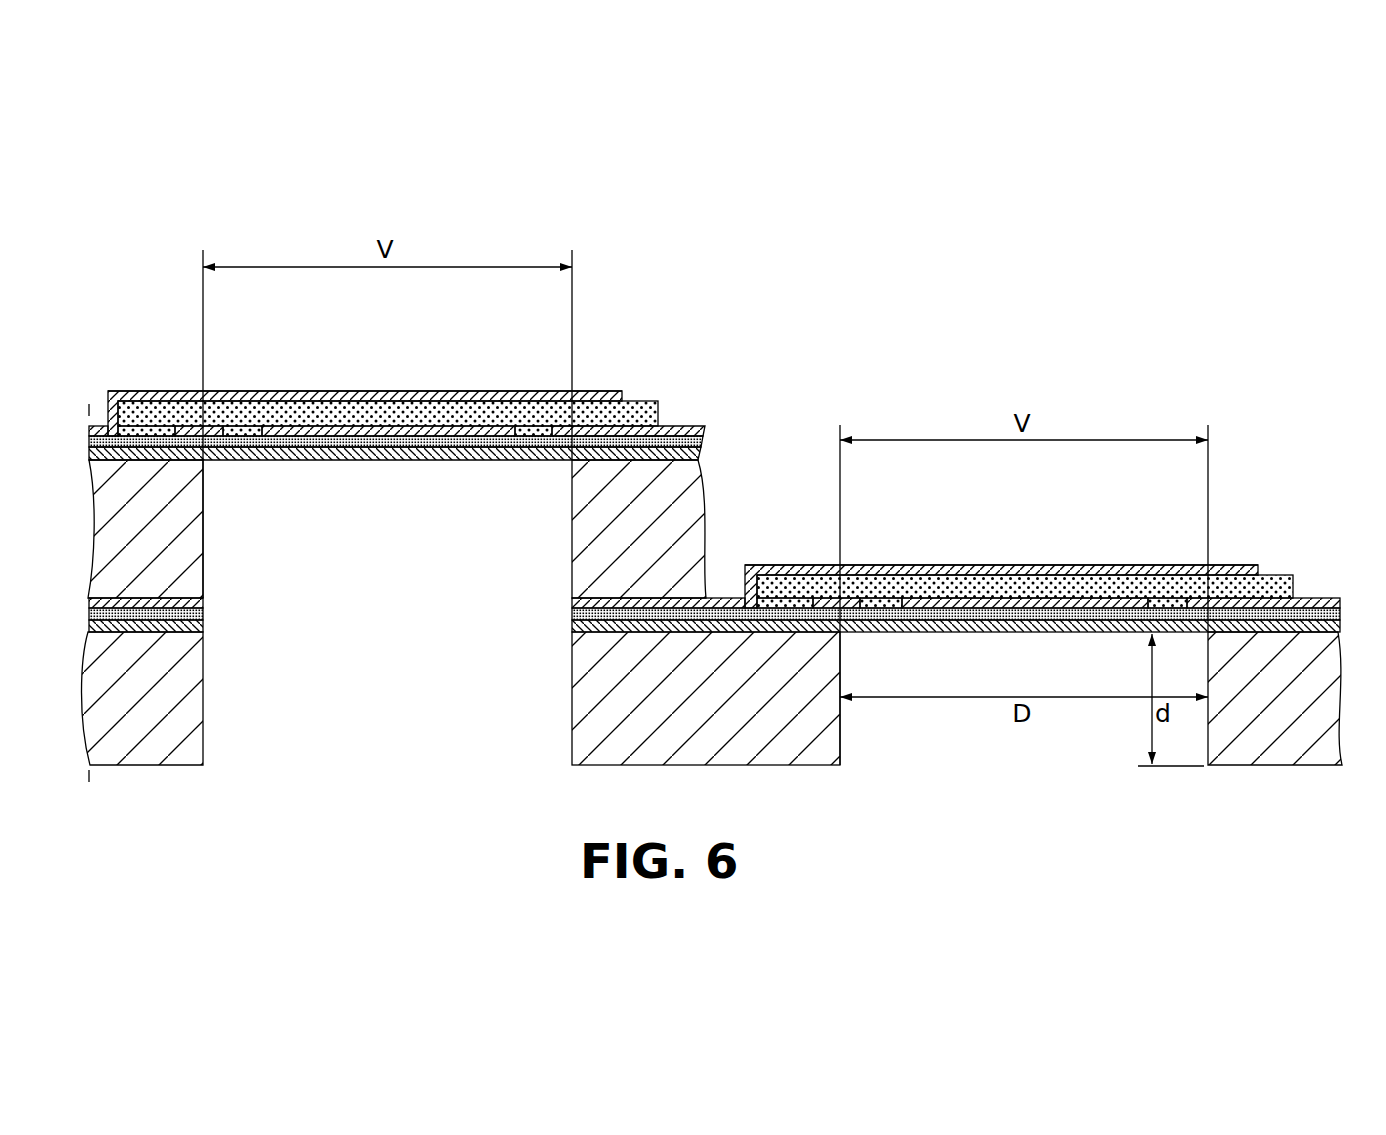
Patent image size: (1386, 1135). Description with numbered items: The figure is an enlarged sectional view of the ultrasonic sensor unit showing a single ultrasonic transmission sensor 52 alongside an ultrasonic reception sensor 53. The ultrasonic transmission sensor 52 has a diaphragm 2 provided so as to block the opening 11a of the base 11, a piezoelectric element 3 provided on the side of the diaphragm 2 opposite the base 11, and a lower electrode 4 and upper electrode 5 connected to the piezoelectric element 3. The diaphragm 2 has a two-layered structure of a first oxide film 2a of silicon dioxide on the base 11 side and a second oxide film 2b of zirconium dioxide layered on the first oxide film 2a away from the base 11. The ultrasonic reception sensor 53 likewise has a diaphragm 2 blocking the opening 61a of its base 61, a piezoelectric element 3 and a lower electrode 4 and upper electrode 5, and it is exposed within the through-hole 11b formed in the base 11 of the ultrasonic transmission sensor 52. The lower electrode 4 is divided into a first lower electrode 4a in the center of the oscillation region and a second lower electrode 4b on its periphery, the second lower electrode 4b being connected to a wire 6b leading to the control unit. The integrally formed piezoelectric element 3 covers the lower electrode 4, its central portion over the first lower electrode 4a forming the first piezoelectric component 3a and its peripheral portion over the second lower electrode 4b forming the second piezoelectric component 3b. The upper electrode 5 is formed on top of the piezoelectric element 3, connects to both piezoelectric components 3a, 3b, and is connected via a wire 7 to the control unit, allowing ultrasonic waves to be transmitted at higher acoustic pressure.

The diaphragm 2 is at (721, 534).
The first oxide film 2a is at (1300, 612).
The second oxide film 2b is at (1331, 625).
The piezoelectric element 3 is at (700, 505).
The first piezoelectric component 3a is at (375, 412).
The second piezoelectric component 3b is at (148, 404).
The lower electrode 4 is at (661, 443).
The first lower electrode 4a is at (705, 466).
The second lower electrode 4b is at (213, 432).
The upper electrode 5 is at (391, 395).
The wire 6b is at (1190, 598).
The wire 7 is at (102, 426).
The base 11 is at (1248, 755).
The opening 11a is at (843, 736).
The through-hole 11b is at (572, 726).
The ultrasonic transmission sensor 52 is at (962, 712).
The ultrasonic reception sensor 53 is at (443, 472).
The base 61 is at (162, 489).
The opening 61a is at (203, 538).